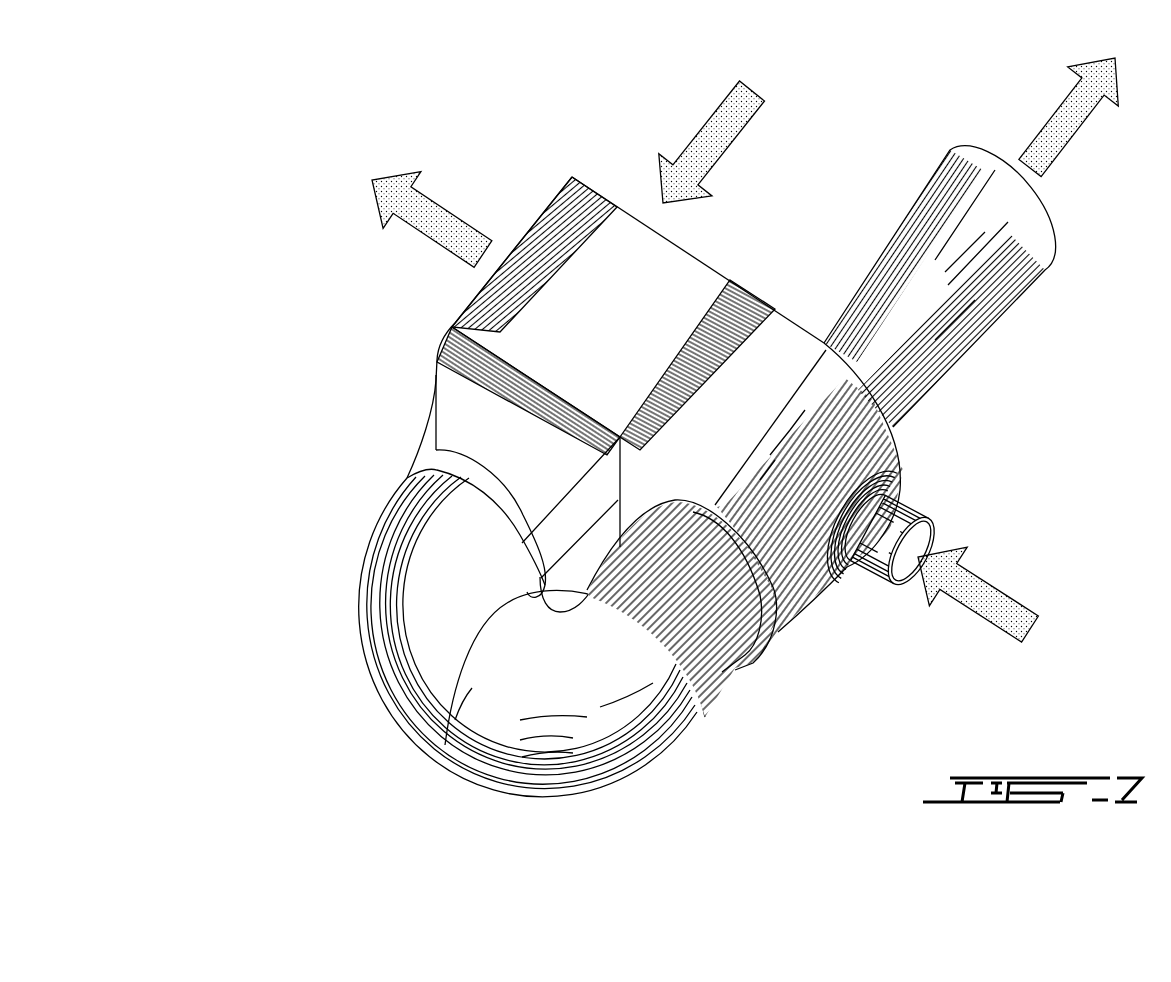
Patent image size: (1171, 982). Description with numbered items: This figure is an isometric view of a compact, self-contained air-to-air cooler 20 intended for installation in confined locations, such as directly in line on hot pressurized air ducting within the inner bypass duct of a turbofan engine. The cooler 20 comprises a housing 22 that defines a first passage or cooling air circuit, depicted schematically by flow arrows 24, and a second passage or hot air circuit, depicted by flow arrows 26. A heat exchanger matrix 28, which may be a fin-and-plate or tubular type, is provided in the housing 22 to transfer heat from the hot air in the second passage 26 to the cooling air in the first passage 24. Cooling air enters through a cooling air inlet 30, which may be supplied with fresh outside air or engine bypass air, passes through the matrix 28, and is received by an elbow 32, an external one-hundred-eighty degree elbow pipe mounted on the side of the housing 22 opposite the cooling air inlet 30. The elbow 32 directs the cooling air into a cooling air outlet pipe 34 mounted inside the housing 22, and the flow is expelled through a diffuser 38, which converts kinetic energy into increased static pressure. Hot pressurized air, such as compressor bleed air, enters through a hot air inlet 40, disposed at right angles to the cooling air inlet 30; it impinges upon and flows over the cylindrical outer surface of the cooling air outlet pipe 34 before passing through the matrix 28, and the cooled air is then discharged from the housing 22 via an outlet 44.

The air-to-air cooler 20 is at (659, 418).
The housing 22 is at (655, 347).
The first passage (cooling air circuit) 24 is at (737, 115).
The second passage (hot air circuit) 26 is at (390, 185).
The heat exchanger matrix 28 is at (597, 287).
The cooling air inlet 30 is at (697, 262).
The elbow 32 is at (393, 587).
The cooling air outlet pipe 34 is at (740, 677).
The diffuser 38 is at (1033, 247).
The hot air inlet 40 is at (907, 502).
The outlet 44 is at (522, 247).